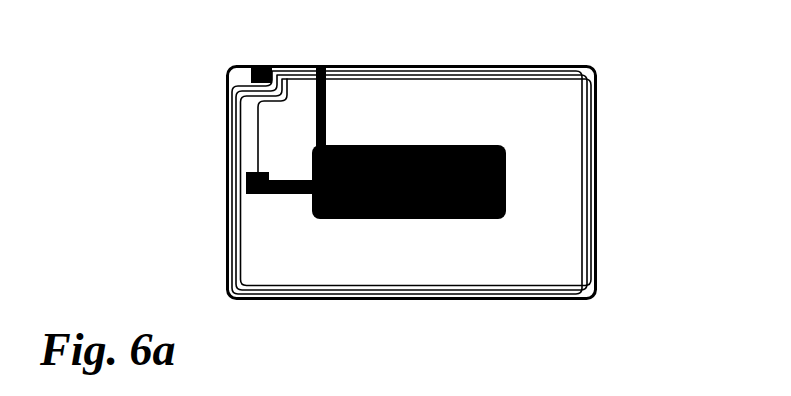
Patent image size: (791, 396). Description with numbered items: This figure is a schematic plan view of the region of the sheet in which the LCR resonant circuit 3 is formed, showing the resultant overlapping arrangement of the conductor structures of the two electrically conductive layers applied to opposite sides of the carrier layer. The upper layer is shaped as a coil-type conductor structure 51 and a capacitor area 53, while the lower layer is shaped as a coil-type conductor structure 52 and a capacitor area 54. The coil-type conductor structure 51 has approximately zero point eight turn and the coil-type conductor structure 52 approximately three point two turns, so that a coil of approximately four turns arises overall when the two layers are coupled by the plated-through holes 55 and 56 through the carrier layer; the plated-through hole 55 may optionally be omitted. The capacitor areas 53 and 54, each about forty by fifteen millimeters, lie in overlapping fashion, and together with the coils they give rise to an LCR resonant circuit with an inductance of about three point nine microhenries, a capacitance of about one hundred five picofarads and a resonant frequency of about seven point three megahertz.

The LCR resonant circuit 3 is at (450, 159).
The coil-type conductor structure 51 is at (607, 230).
The coil-type conductor structure 52 is at (580, 233).
The capacitor area 53 is at (409, 119).
The capacitor area 54 is at (459, 145).
The plated-through hole 55 is at (252, 66).
The plated-through hole 56 is at (246, 183).